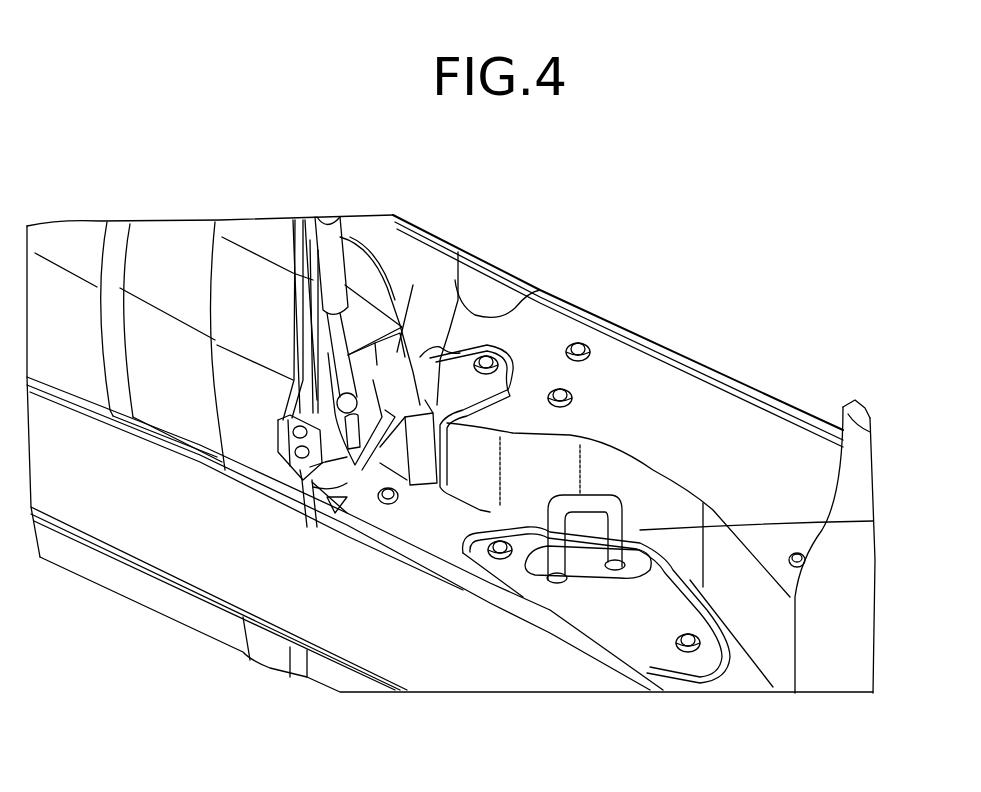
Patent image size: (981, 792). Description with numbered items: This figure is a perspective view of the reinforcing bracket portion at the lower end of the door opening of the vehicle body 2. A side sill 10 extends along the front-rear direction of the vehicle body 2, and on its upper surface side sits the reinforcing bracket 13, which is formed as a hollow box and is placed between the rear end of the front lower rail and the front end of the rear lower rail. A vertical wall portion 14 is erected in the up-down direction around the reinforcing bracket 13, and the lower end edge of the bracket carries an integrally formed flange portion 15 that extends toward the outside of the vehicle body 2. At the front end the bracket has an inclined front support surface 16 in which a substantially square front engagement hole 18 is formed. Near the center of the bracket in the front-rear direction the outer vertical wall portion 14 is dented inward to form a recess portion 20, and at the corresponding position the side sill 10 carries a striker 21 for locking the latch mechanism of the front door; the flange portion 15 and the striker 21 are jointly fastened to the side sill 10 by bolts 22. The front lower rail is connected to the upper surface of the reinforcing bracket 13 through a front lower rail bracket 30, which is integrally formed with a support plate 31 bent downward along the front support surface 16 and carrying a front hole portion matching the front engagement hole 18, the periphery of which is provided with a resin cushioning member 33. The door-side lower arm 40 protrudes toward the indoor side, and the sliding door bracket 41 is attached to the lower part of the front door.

The vehicle body 2 is at (250, 593).
The side sill 10 is at (665, 658).
The reinforcing bracket 13 is at (620, 383).
The vertical wall portion 14 is at (527, 455).
The flange portion 15 is at (517, 573).
The front support surface 16 is at (470, 465).
The front engagement hole 18 is at (425, 400).
The recess portion 20 is at (875, 520).
The striker 21 is at (622, 623).
The bolts 22 is at (475, 565).
The front lower rail bracket 30 is at (387, 240).
The support plate 31 is at (370, 480).
The cushioning member 33 is at (395, 385).
The lower arm 40 is at (360, 350).
The sliding door bracket 41 is at (187, 253).